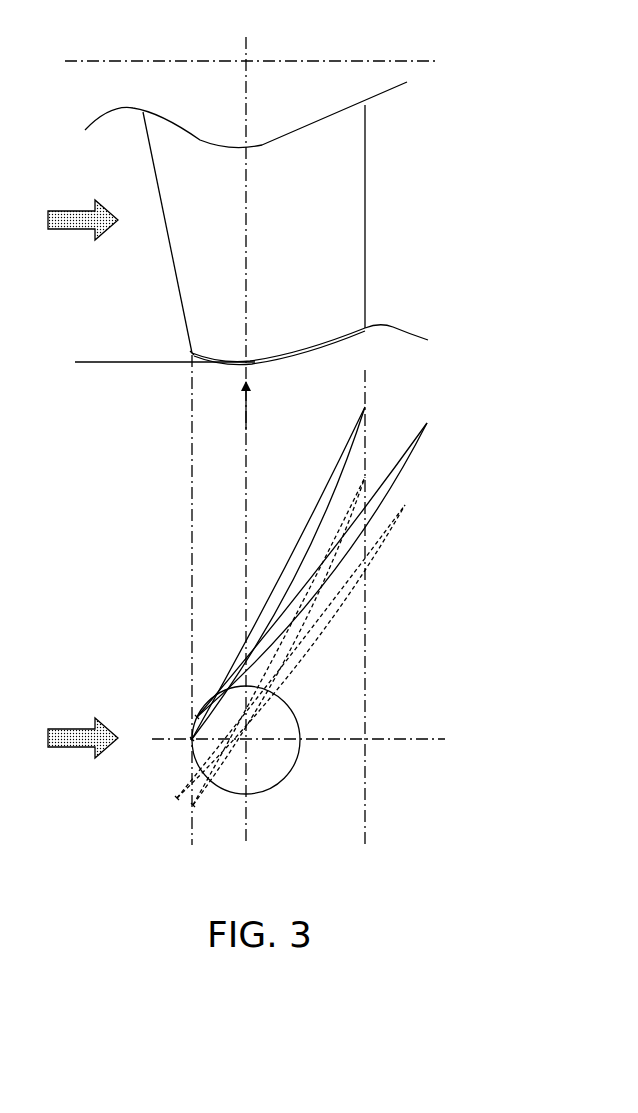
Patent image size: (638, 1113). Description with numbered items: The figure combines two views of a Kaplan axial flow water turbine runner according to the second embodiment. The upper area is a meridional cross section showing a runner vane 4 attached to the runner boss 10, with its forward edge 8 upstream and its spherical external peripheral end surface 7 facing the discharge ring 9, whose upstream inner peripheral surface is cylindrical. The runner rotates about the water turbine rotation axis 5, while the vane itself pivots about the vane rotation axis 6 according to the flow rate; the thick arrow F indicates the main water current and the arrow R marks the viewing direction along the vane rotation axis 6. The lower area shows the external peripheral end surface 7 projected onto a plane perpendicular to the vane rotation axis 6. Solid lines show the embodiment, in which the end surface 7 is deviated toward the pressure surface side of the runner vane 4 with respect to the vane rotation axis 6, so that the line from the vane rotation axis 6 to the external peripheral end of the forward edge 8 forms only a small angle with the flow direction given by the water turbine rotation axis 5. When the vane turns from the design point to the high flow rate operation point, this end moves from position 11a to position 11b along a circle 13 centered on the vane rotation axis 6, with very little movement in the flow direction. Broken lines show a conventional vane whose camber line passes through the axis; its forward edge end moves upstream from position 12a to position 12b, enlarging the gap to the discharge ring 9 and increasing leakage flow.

The runner vane 4 is at (372, 212).
The water turbine rotation axis 5 is at (340, 61).
The vane rotation axis 6 is at (248, 222).
The external peripheral end surface 7 is at (283, 352).
The forward edge 8 is at (152, 181).
The discharge ring 9 is at (399, 342).
The runner boss 10 is at (380, 90).
The external peripheral end position at design point 11a is at (192, 353).
The external peripheral end position at high flow rate operation point 11b is at (195, 715).
The conventional external peripheral end position at design point 12a is at (193, 806).
The conventional external peripheral end position at high flow rate operation point 12b is at (178, 798).
The circle 13 is at (298, 703).
The water current F is at (73, 205).
The arrow R direction R is at (249, 405).